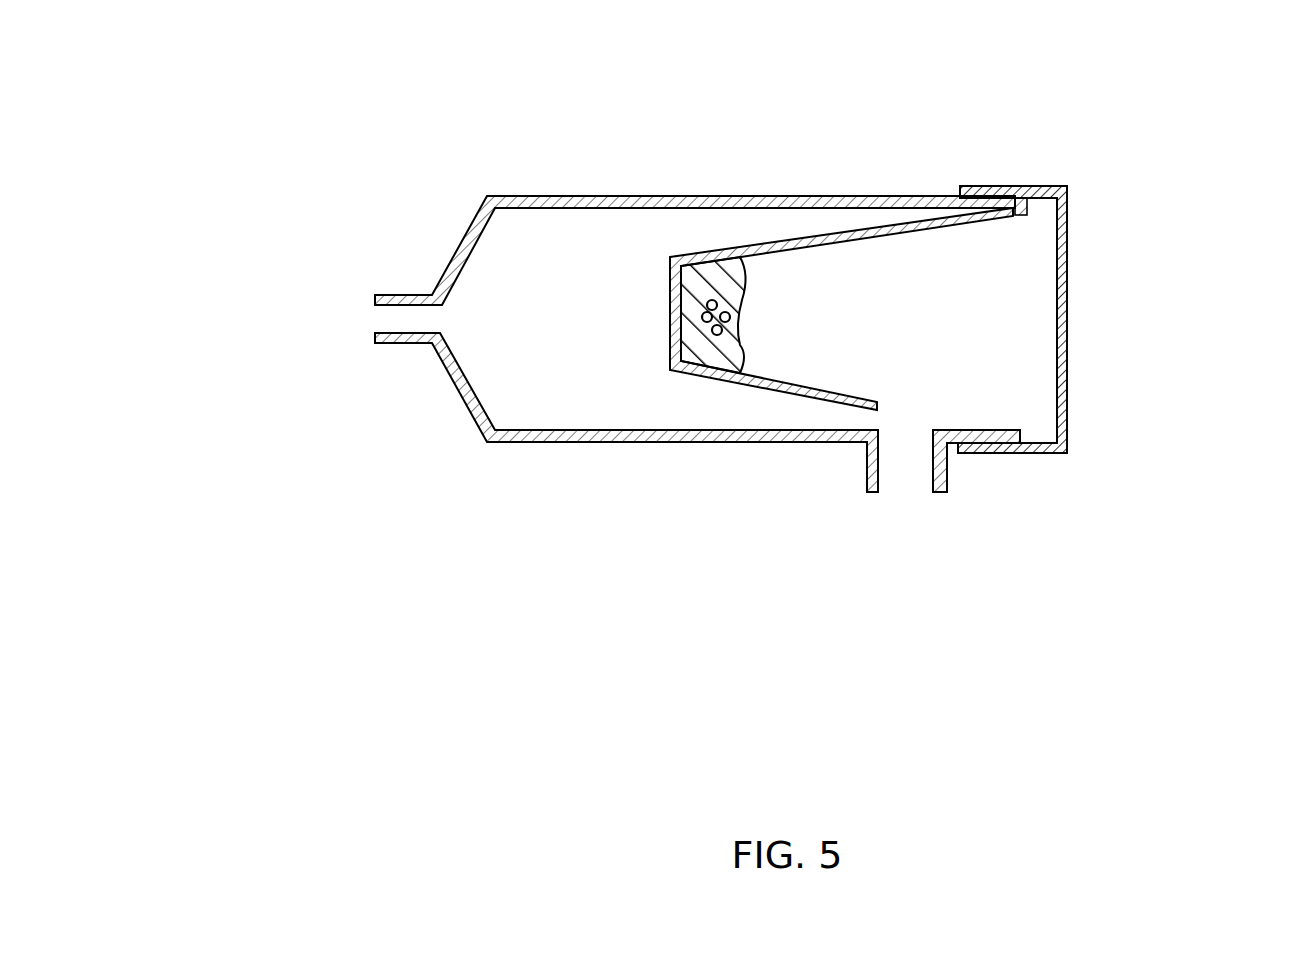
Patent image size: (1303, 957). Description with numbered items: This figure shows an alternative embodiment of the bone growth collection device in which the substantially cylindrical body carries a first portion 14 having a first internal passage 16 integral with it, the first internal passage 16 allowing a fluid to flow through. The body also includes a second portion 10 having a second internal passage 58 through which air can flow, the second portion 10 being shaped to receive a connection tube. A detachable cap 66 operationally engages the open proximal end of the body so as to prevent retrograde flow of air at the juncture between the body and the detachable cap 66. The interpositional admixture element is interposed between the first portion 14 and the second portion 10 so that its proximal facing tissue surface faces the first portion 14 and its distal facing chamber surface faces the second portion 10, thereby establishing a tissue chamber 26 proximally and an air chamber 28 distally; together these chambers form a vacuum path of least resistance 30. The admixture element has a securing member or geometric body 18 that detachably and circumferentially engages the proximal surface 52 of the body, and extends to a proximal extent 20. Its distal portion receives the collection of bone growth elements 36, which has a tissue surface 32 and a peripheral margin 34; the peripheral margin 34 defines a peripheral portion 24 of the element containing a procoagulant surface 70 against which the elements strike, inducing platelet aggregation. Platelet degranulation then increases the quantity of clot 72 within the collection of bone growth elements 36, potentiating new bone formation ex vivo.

The second portion 10 is at (380, 353).
The first portion 14 is at (950, 466).
The first internal passage 16 is at (902, 458).
The securing member or geometric body 18 is at (960, 198).
The proximal extent 20 is at (1030, 218).
The peripheral portion 24 is at (940, 242).
The tissue chamber 26 is at (620, 385).
The air chamber 28 is at (563, 333).
The vacuum path of least resistance 30 is at (790, 413).
The tissue surface 32 is at (804, 260).
The peripheral margin 34 is at (745, 372).
The collection of bone growth elements 36 is at (730, 280).
The proximal surface 52 is at (1016, 196).
The second internal passage 58 is at (385, 317).
The detachable cap 66 is at (1070, 402).
The procoagulant surface 70 is at (923, 240).
The quantity of clot 72 is at (713, 293).